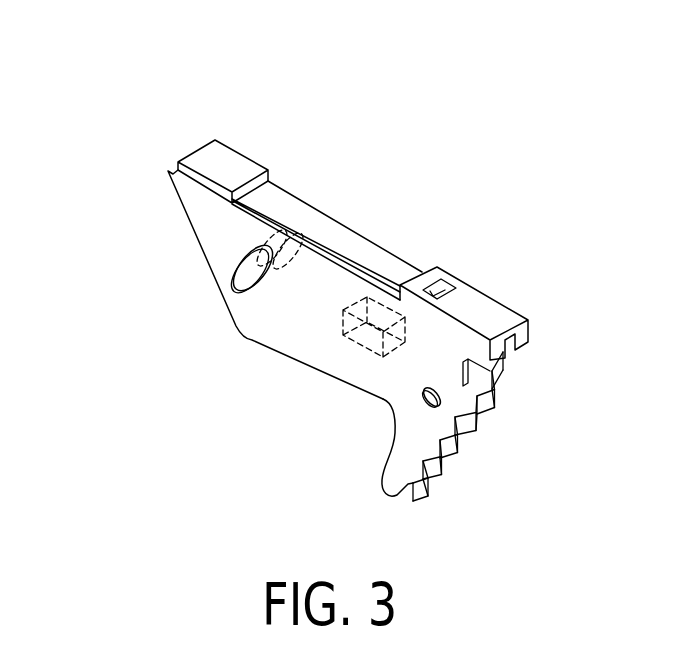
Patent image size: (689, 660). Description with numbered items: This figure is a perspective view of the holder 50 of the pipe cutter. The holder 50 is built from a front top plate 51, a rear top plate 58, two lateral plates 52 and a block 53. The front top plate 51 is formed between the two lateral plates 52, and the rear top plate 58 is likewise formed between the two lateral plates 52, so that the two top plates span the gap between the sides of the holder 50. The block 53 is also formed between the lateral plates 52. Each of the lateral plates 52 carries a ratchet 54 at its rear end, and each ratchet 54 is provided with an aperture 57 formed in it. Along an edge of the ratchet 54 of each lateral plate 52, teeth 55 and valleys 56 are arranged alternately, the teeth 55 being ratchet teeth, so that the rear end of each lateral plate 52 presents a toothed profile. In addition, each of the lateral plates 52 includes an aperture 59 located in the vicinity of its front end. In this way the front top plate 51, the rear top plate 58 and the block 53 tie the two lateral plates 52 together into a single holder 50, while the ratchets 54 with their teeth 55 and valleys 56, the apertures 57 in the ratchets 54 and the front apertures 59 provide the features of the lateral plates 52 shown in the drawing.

The holder 50 is at (470, 137).
The front top plate 51 is at (220, 163).
The lateral plates 52 is at (331, 284).
The block 53 is at (343, 341).
The ratchet 54 is at (403, 460).
The teeth 55 is at (490, 460).
The valleys 56 is at (467, 440).
The aperture 57 is at (424, 394).
The rear top plate 58 is at (467, 305).
The aperture 59 is at (240, 273).